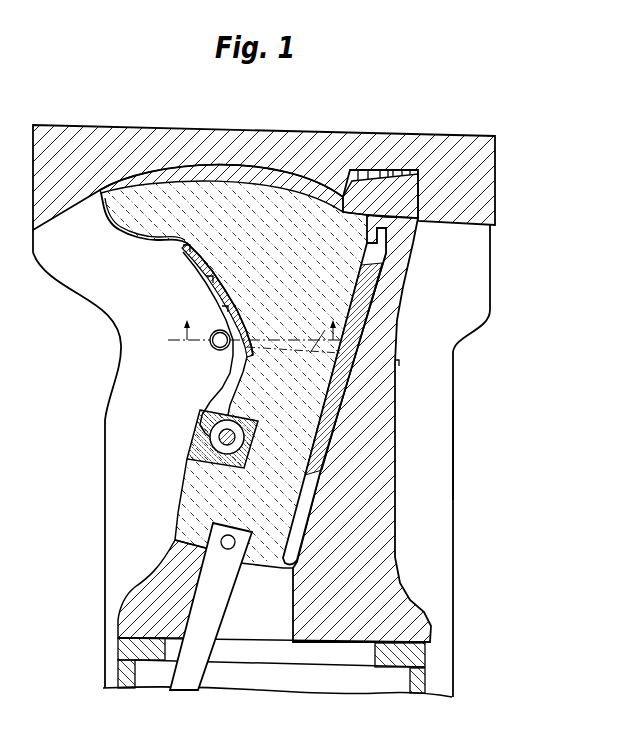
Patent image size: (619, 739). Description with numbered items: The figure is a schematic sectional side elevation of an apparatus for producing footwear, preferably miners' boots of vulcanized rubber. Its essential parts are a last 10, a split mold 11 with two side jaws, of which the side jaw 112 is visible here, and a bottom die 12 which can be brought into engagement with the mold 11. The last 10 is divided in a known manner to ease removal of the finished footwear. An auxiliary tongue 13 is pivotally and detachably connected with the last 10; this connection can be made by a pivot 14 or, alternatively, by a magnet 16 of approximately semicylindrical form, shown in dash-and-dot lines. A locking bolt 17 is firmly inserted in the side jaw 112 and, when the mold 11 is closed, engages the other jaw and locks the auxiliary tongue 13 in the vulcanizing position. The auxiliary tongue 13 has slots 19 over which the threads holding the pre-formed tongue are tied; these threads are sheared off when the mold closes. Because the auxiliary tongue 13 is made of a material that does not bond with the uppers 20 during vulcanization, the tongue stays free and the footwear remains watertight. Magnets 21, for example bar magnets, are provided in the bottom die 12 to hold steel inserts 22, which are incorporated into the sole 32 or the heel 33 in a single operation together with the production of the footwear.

The last 10 is at (232, 195).
The split mold 11 is at (495, 488).
The side jaw 112 is at (454, 448).
The bottom die 12 is at (95, 147).
The auxiliary tongue 13 is at (220, 397).
The pivot 14 is at (220, 437).
The magnet 16 is at (223, 460).
The locking bolt 17 is at (213, 347).
The slots 19 is at (222, 307).
The uppers 20 is at (397, 317).
The magnets 21 is at (413, 170).
The steel inserts 22 is at (420, 190).
The sole 32 is at (148, 175).
The heel 33 is at (352, 195).